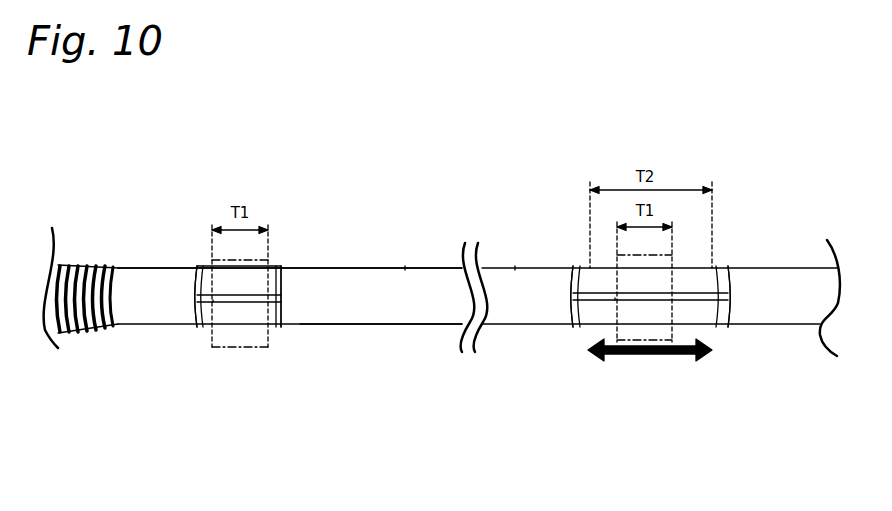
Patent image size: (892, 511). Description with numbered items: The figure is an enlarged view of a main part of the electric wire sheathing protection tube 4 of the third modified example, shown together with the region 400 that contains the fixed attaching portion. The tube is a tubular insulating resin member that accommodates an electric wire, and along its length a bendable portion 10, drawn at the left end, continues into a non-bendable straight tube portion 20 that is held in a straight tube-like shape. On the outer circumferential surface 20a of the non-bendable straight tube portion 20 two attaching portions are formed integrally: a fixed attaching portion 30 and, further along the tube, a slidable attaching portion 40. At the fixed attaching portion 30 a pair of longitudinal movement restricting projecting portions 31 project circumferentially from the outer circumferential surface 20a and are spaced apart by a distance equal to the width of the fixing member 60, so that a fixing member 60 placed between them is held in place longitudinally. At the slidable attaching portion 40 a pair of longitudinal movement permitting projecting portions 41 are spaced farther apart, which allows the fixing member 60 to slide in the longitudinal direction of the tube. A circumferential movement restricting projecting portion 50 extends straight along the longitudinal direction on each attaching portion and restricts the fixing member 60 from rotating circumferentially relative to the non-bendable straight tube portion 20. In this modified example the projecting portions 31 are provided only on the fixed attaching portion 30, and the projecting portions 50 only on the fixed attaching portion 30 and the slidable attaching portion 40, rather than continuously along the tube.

The electric wire sheathing protection tube 4 is at (417, 150).
The tube assembly portion 400 is at (320, 207).
The bendable portion 10 is at (80, 265).
The non-bendable straight tube portion 20 is at (427, 332).
The outer circumferential surface 20a is at (370, 323).
The fixed attaching portion 30 is at (202, 325).
The longitudinal movement restricting projecting portion 31 is at (200, 268).
The slidable attaching portion 40 is at (597, 327).
The longitudinal movement permitting projecting portion 41 is at (578, 266).
The circumferential movement restricting projecting portion 50 is at (252, 304).
The fixing member 60 is at (213, 306).